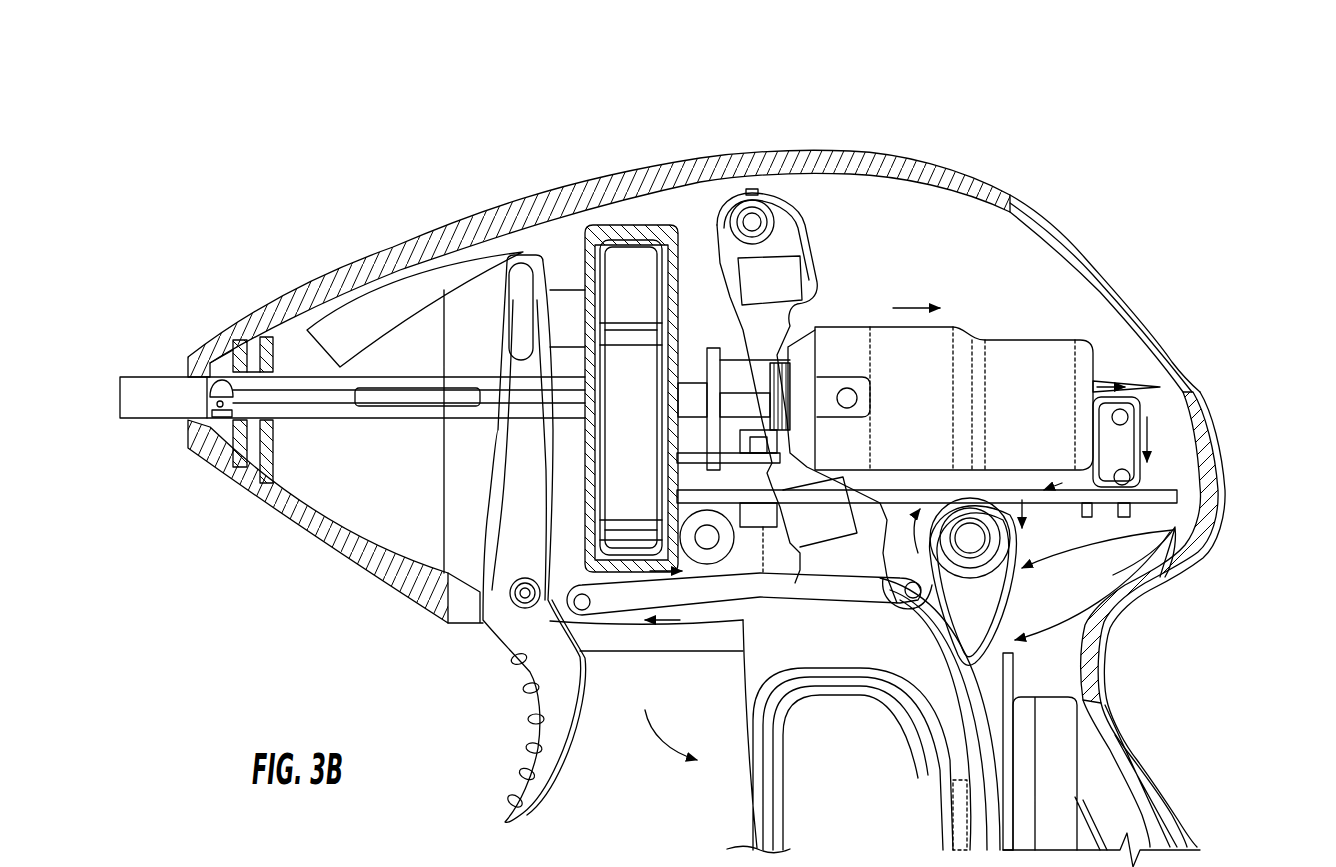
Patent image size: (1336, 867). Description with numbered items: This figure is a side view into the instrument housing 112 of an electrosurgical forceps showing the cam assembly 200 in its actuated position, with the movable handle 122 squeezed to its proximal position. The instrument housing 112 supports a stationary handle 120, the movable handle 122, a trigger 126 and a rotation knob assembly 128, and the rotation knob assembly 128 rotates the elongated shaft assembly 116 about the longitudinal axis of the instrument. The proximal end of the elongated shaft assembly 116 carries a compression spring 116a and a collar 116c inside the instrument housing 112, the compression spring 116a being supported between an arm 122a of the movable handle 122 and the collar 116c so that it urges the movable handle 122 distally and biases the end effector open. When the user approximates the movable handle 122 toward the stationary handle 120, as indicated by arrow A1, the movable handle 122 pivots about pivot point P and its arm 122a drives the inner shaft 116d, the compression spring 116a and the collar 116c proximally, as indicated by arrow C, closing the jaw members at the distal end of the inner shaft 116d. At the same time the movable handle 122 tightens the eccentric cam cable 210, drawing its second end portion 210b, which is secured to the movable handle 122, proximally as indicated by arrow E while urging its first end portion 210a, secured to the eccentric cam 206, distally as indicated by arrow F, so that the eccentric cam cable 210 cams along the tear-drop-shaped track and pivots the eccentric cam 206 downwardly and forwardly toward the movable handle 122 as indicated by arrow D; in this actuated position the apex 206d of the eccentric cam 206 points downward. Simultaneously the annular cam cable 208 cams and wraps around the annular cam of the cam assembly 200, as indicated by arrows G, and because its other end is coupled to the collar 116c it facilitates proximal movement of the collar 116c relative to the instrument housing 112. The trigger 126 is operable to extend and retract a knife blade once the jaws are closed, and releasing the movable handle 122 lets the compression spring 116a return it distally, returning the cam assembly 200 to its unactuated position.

The instrument housing 112 is at (1075, 258).
The elongated shaft assembly 116 is at (178, 402).
The compression spring 116a is at (793, 383).
The collar 116c is at (927, 377).
The inner shaft 116d is at (735, 393).
The stationary handle 120 is at (1108, 660).
The movable handle 122 is at (745, 818).
The arm 122a is at (764, 373).
The trigger 126 is at (530, 738).
The rotation knob assembly 128 is at (633, 290).
The cam assembly 200 is at (955, 510).
The eccentric cam 206 is at (968, 630).
The apex 206d is at (1005, 683).
The annular cam cable 208 is at (977, 462).
The eccentric cam cable 210 is at (1170, 583).
The first end portion 210a is at (1188, 552).
The second end portion 210b is at (790, 578).
The pivot point P is at (750, 226).
The arrow C is at (913, 303).
The arrows G is at (1178, 517).
The arrow D is at (1100, 628).
The arrow E is at (677, 570).
The arrow F is at (657, 623).
The arrow A1 is at (660, 725).